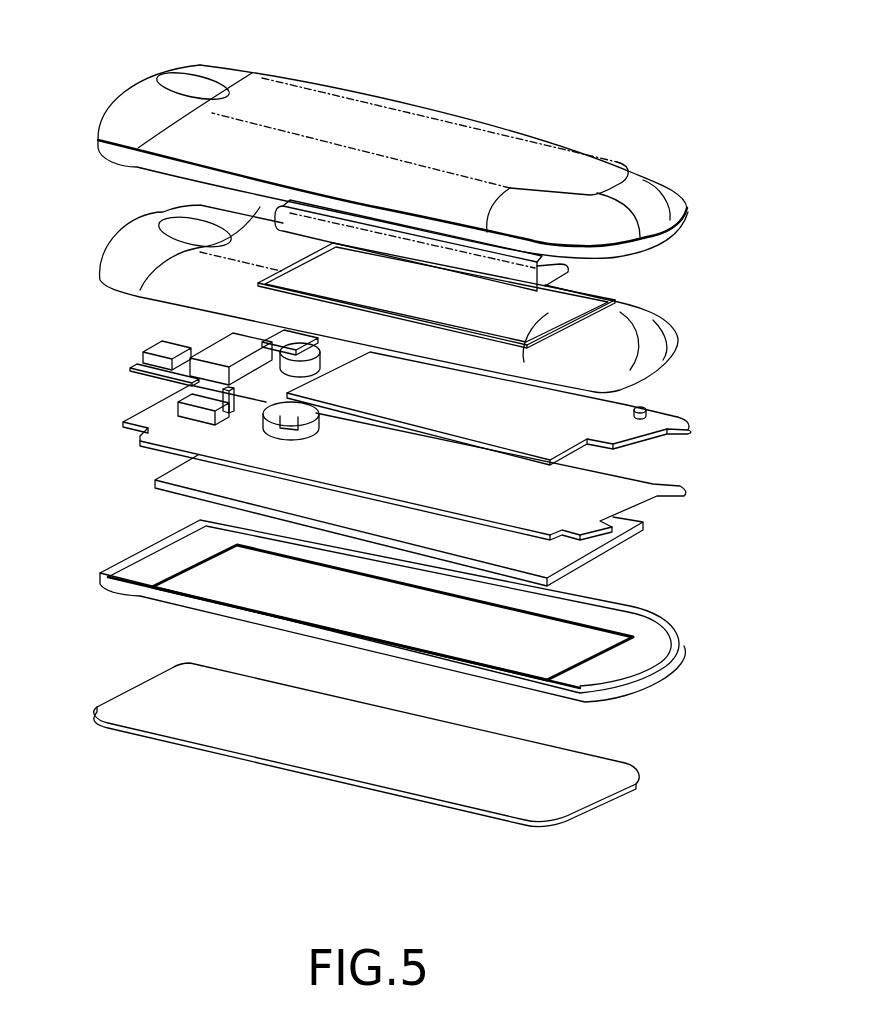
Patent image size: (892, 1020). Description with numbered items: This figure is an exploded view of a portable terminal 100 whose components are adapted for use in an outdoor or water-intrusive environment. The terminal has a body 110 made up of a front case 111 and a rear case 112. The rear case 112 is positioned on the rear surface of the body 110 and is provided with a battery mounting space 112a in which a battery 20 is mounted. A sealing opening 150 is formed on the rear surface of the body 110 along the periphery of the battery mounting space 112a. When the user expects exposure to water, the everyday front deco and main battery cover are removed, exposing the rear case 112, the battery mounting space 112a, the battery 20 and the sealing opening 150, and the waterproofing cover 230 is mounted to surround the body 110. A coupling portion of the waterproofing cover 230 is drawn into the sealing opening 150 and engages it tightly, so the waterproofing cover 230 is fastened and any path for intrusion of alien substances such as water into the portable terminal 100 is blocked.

The portable terminal 100 is at (79, 60).
The body 110 is at (78, 582).
The front case 111 is at (676, 628).
The rear case 112 is at (660, 332).
The battery mounting space 112a is at (522, 336).
The sealing opening 150 is at (143, 243).
The battery 20 is at (553, 285).
The waterproofing cover 230 is at (657, 175).